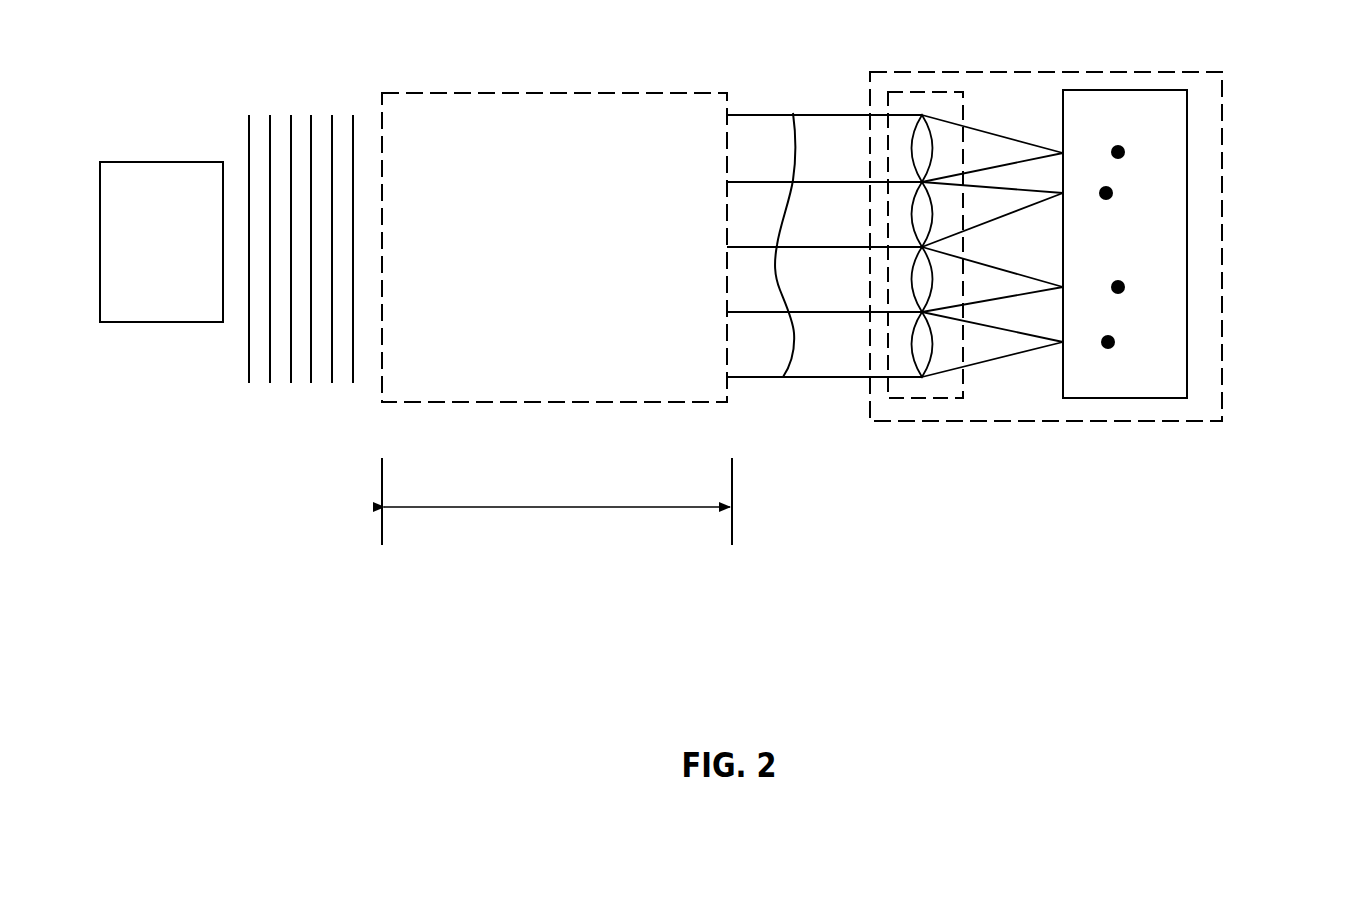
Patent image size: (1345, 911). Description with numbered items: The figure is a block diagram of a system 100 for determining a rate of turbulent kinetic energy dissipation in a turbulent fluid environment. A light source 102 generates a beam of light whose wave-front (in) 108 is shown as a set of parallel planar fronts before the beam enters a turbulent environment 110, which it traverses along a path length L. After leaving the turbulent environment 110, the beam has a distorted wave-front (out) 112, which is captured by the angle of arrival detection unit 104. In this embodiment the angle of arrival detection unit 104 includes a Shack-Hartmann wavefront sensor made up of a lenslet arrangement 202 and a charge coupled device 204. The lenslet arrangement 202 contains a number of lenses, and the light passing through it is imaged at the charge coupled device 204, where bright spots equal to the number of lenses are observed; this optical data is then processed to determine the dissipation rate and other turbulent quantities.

The system 100 is at (1017, 581).
The light source 102 is at (162, 162).
The angle of arrival detection unit 104 is at (1223, 247).
The wave-front (in) 108 is at (338, 91).
The turbulent environment 110 is at (552, 93).
The wave front out 112 is at (830, 88).
The lenslet arrangement 202 is at (923, 92).
The charge coupled device (CCD) 204 is at (1123, 90).